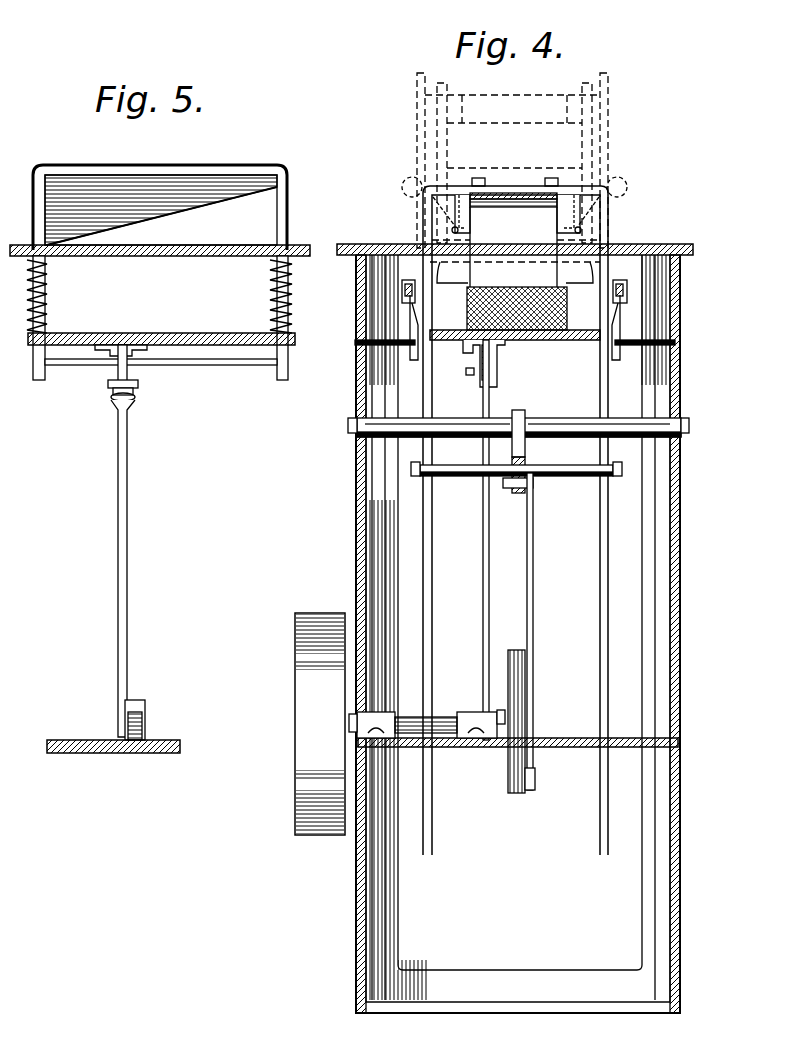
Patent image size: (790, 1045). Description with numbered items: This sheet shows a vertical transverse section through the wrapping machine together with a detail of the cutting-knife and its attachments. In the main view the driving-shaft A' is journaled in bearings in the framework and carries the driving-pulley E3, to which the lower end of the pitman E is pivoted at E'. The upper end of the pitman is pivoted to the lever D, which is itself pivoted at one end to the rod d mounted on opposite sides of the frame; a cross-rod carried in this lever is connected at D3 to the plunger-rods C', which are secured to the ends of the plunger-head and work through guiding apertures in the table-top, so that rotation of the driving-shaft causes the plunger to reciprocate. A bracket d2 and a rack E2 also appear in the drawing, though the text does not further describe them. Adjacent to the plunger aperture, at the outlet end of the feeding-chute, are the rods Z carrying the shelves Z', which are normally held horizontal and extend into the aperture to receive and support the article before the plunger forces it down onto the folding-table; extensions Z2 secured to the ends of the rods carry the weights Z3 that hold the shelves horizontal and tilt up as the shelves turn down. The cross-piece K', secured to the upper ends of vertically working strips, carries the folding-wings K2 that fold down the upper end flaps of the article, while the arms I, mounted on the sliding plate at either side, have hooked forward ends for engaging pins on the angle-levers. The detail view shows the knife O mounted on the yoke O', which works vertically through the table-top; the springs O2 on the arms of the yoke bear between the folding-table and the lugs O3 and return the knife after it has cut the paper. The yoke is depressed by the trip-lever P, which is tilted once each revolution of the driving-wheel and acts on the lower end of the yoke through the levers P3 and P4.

In FIG. 5, the knife O is at (160, 207).
In FIG. 5, the yoke O' is at (253, 223).
In FIG. 5, the springs O2 is at (47, 302).
In FIG. 5, the lugs O3 is at (45, 262).
In FIG. 5, the trip-lever P is at (142, 708).
In FIG. 5, the lever P3 is at (127, 475).
In FIG. 5, the lever P4 is at (138, 388).
In FIG. 4, the rods Z is at (515, 516).
In FIG. 4, the shelves Z' is at (513, 214).
In FIG. 4, the extensions Z2 is at (440, 212).
In FIG. 4, the weights Z3 is at (402, 188).
In FIG. 4, the folding-wings K2 is at (390, 244).
In FIG. 4, the cross-piece K' is at (535, 269).
In FIG. 4, the arms I is at (402, 294).
In FIG. 4, the plunger-rods C' is at (517, 634).
In FIG. 4, the rod d is at (572, 400).
In FIG. 4, the rod bracket d2 is at (453, 490).
In FIG. 4, the lever D is at (527, 466).
In FIG. 4, the connection of cross-rod to plunger-rod D3 is at (411, 470).
In FIG. 4, the pitman E is at (544, 631).
In FIG. 4, the pivot of pitman E' is at (542, 721).
In FIG. 4, the rack E2 is at (566, 547).
In FIG. 4, the driving-pulley E3 is at (295, 772).
In FIG. 4, the driving-shaft A' is at (513, 711).